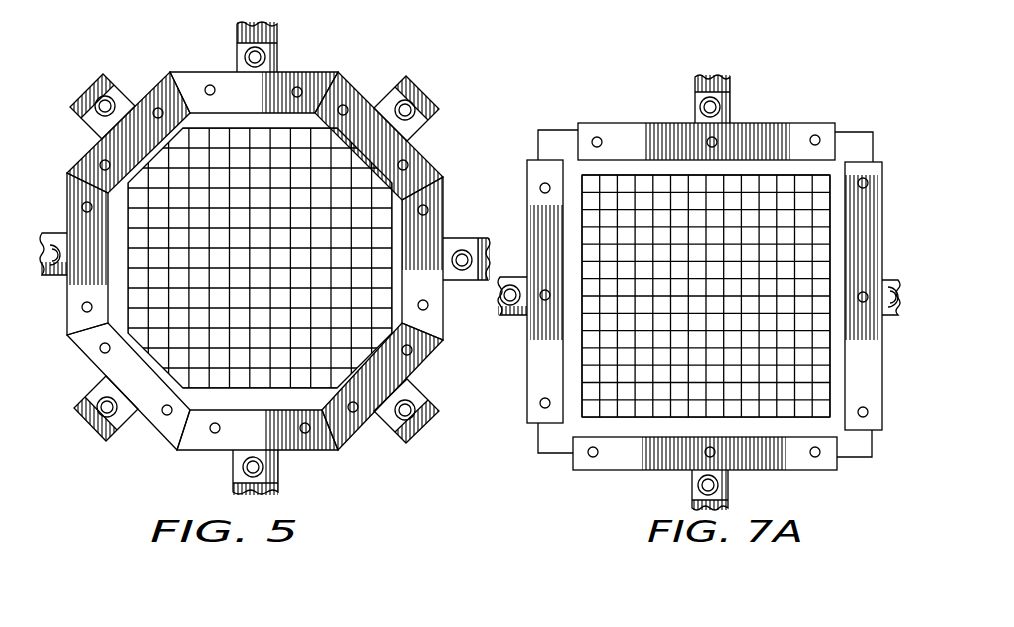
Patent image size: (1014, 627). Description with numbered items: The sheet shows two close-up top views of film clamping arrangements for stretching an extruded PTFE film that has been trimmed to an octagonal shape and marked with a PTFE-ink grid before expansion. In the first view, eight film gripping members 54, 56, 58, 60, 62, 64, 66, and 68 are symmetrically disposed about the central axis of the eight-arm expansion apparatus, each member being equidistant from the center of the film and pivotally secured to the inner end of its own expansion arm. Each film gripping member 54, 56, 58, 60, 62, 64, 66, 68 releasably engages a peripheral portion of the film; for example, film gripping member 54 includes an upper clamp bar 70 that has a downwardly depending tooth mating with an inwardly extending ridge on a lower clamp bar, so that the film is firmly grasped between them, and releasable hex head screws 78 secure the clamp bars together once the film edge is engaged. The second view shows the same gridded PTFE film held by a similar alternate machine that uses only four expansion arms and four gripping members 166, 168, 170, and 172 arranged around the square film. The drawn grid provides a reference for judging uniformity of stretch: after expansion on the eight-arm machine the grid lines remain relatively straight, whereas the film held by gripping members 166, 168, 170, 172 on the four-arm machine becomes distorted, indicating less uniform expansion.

In FIG. 5, the film gripping member 54 is at (470, 313).
In FIG. 5, the film gripping member 56 is at (358, 425).
In FIG. 5, the film gripping member 58 is at (437, 316).
In FIG. 5, the film gripping member 60 is at (417, 158).
In FIG. 5, the film gripping member 62 is at (293, 78).
In FIG. 5, the film gripping member 64 is at (158, 97).
In FIG. 5, the film gripping member 66 is at (68, 200).
In FIG. 5, the film gripping member 68 is at (150, 408).
In FIG. 5, the upper clamp bar 70 is at (273, 470).
In FIG. 5, the hex head screws 78 is at (300, 427).
In FIG. 7A, the film gripping member 166 is at (800, 458).
In FIG. 7A, the film gripping member 168 is at (873, 401).
In FIG. 7A, the film gripping member 170 is at (777, 137).
In FIG. 7A, the film gripping member 172 is at (537, 218).